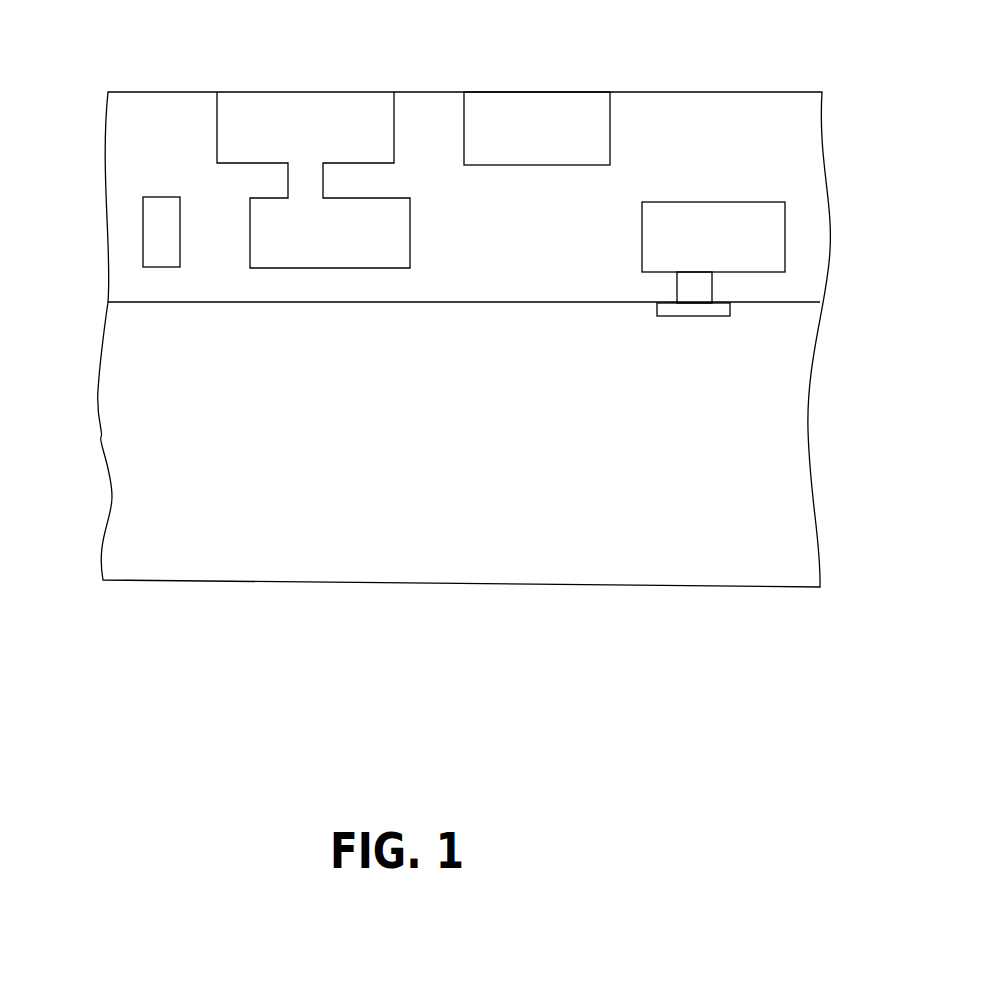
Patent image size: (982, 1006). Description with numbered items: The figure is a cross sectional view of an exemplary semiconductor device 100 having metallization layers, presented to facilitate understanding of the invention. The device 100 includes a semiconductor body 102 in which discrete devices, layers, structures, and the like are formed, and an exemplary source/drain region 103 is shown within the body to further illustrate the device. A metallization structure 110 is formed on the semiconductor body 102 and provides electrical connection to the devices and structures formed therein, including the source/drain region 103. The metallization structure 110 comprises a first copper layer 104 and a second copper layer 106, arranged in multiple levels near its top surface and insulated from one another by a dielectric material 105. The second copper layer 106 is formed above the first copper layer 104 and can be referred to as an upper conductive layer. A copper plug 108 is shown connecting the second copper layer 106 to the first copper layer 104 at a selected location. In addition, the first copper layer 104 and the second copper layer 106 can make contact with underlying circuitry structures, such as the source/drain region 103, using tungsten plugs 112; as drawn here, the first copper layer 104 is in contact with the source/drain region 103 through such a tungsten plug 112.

The semiconductor device 100 is at (250, 668).
The semiconductor body 102 is at (467, 442).
The source/drain region 103 is at (678, 342).
The first copper layer 104 is at (730, 202).
The dielectric material 105 is at (540, 267).
The second copper layer 106 is at (262, 100).
The copper plug 108 is at (266, 181).
The metallization structure 110 is at (114, 55).
The tungsten plug 112 is at (713, 288).